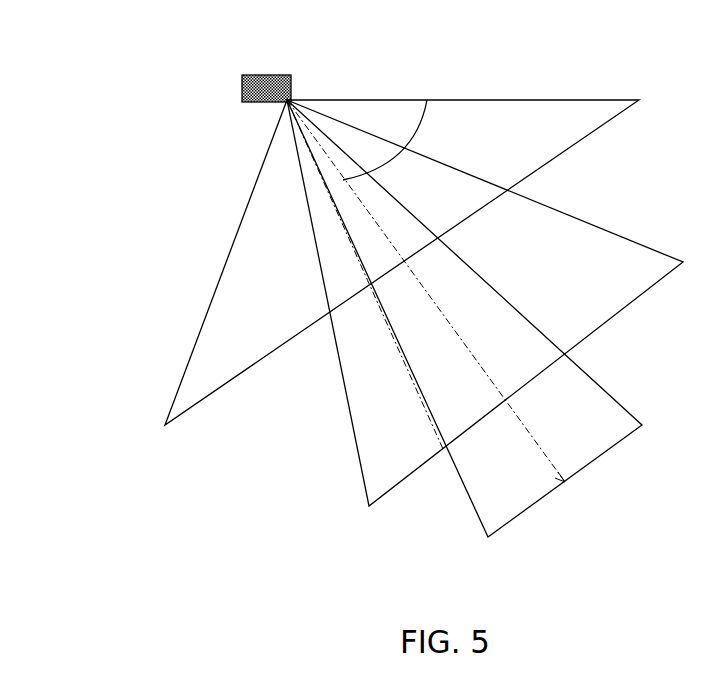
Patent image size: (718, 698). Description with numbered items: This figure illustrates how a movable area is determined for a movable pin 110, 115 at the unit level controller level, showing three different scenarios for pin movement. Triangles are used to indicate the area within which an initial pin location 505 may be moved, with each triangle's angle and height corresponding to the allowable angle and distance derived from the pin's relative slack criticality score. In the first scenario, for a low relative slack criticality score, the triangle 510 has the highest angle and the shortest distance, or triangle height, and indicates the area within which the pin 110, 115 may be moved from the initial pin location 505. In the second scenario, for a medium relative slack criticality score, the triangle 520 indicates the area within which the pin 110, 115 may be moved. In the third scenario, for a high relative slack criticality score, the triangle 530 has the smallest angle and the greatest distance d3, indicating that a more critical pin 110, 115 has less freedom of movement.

The pin 110 is at (165, 64).
The pin 115 is at (273, 66).
The initial pin location 505 is at (165, 63).
The triangle 510 is at (228, 260).
The triangle 520 is at (355, 442).
The triangle 530 is at (467, 492).
The distance (triangle height) d3 is at (428, 291).